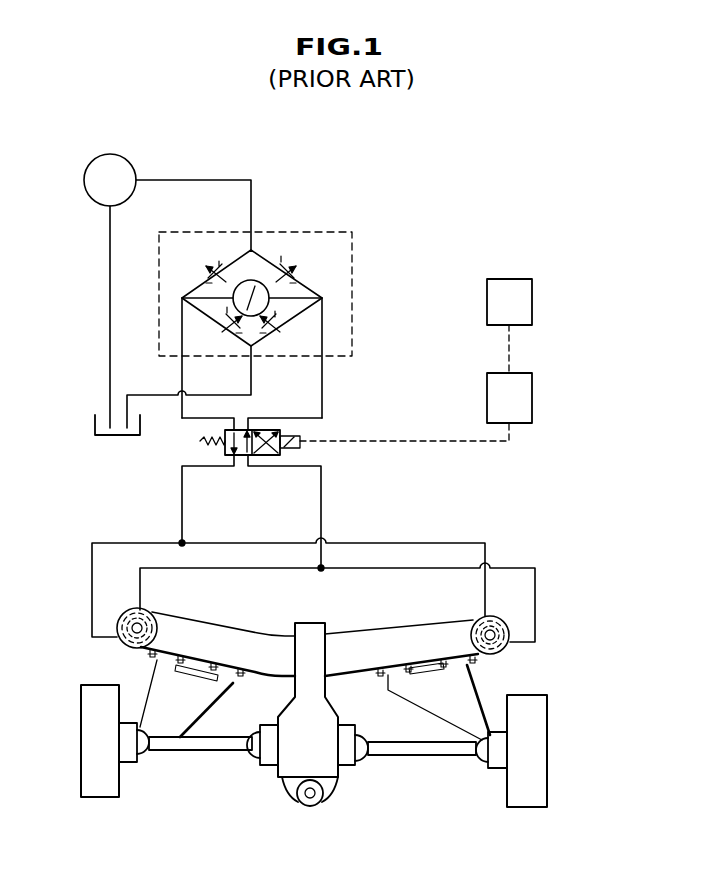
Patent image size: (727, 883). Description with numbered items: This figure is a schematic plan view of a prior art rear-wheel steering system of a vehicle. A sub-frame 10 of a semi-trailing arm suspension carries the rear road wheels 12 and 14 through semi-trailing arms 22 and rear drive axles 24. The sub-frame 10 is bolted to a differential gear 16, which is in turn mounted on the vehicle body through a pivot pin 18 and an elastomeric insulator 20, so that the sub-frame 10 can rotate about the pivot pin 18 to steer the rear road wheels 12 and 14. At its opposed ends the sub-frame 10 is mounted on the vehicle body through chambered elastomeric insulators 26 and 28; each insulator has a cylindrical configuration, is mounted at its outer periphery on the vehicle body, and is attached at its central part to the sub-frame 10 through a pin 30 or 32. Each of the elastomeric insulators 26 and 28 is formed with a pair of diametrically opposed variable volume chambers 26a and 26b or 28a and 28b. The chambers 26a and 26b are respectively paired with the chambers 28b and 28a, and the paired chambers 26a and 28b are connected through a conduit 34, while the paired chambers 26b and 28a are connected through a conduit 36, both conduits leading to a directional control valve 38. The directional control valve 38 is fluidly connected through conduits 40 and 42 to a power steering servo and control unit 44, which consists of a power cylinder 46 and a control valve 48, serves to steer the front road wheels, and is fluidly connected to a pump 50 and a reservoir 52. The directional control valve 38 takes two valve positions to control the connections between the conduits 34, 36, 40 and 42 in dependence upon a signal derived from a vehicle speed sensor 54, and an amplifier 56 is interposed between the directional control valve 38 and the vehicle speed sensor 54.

The sub-frame 10 is at (411, 630).
The rear road wheel 12 is at (103, 800).
The rear road wheel 14 is at (548, 785).
The differential gear 16 is at (330, 713).
The pivot pin 18 is at (318, 797).
The elastomeric insulator 20 is at (297, 801).
The semi-trailing arm 22 is at (173, 727).
The rear drive axle 24 is at (225, 752).
The chambered elastomeric insulator 26 is at (136, 609).
The variable volume chamber 26a is at (120, 641).
The variable volume chamber 26b is at (150, 620).
The chambered elastomeric insulator 28 is at (493, 630).
The variable volume chamber 28a is at (505, 636).
The variable volume chamber 28b is at (500, 622).
The pin 30 is at (131, 625).
The pin 32 is at (493, 638).
The conduit 34 is at (195, 543).
The conduit 36 is at (330, 568).
The directional control valve 38 is at (282, 430).
The conduit 40 is at (182, 338).
The conduit 42 is at (324, 370).
The power steering servo and control unit 44 is at (342, 232).
The power cylinder 46 is at (253, 288).
The control valve 48 is at (300, 316).
The pump 50 is at (113, 155).
The reservoir 52 is at (96, 418).
The vehicle speed sensor 54 is at (533, 302).
The amplifier 56 is at (533, 398).